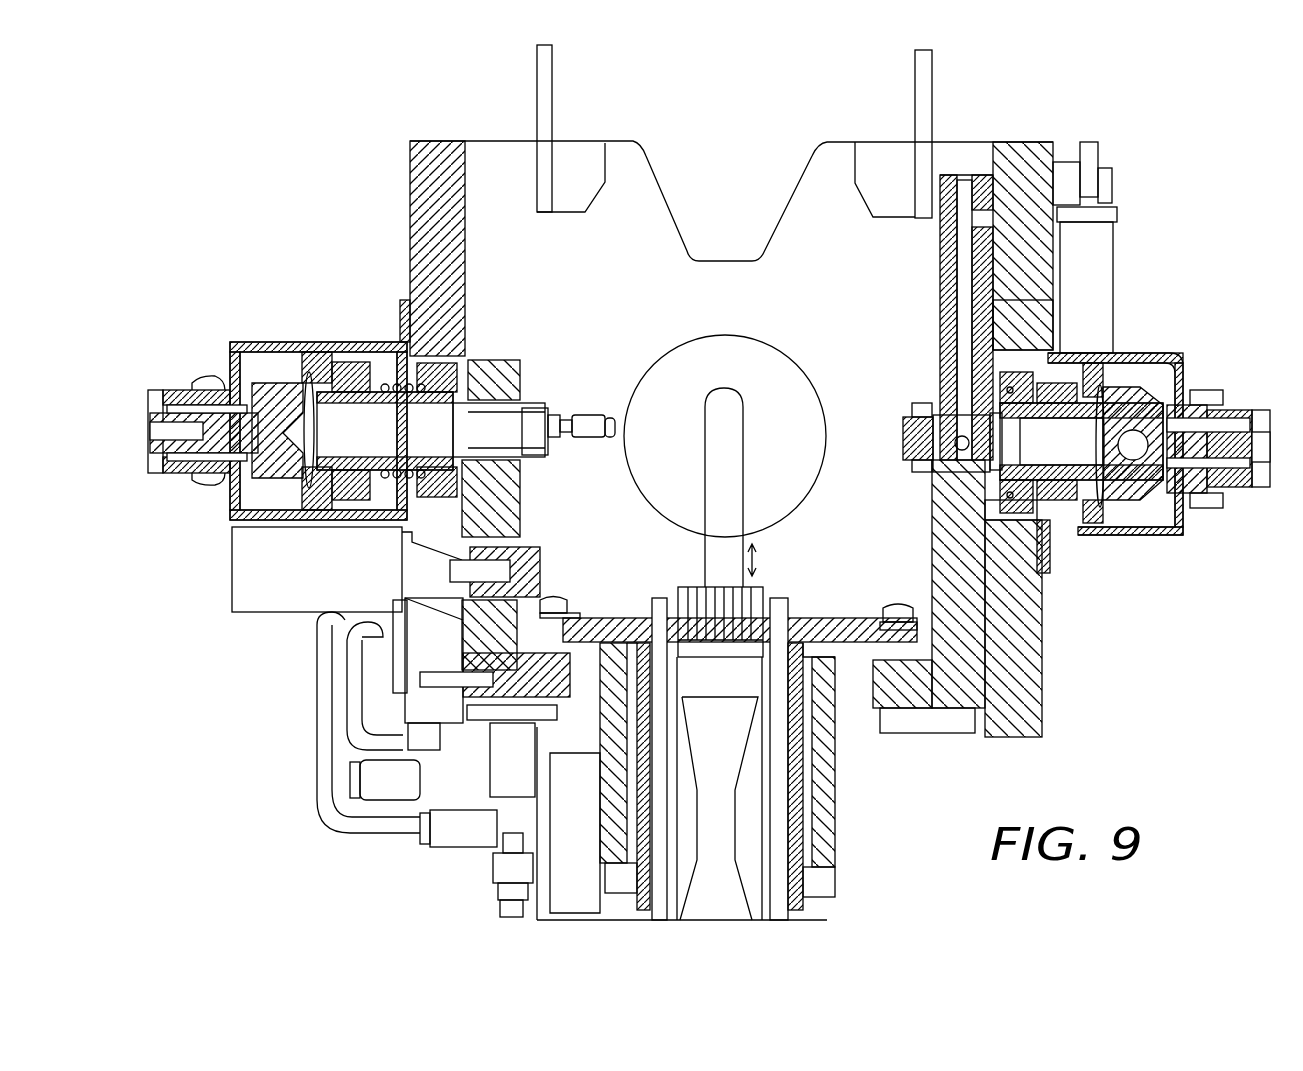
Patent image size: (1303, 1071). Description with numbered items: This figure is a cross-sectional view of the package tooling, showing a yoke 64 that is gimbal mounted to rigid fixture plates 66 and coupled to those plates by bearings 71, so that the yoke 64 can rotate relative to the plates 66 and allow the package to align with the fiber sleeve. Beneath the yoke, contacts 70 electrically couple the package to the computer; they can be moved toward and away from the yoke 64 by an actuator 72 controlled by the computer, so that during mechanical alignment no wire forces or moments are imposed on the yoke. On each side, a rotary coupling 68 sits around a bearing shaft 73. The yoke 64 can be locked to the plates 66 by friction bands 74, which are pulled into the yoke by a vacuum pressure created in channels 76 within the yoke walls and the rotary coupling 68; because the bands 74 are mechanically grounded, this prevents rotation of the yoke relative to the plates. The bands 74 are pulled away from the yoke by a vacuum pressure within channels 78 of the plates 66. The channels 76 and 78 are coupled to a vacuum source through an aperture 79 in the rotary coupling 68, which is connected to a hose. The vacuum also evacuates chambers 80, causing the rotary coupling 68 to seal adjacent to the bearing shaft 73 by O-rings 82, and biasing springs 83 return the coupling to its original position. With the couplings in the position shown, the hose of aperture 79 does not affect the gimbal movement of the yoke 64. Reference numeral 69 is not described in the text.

The yoke 64 is at (945, 188).
The rigid fixture plates 66 is at (1023, 177).
The rotary coupling 68 is at (1143, 475).
The fluid fitting 69 is at (230, 362).
The contacts 70 is at (756, 586).
The bearings 71 is at (405, 368).
The actuator 72 is at (778, 898).
The bearing shaft 73 is at (300, 480).
The friction bands 74 is at (995, 322).
The channels 76 is at (963, 257).
The channels 78 is at (1041, 634).
The aperture 79 is at (1138, 447).
The chambers 80 is at (1050, 500).
The O-rings 82 is at (1105, 500).
The biasing springs 83 is at (1236, 406).